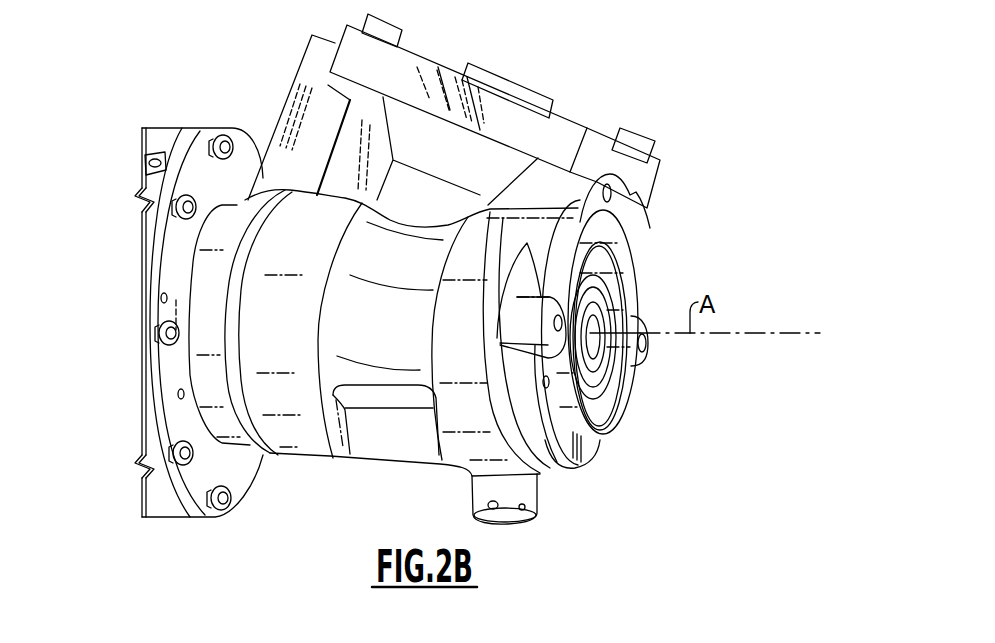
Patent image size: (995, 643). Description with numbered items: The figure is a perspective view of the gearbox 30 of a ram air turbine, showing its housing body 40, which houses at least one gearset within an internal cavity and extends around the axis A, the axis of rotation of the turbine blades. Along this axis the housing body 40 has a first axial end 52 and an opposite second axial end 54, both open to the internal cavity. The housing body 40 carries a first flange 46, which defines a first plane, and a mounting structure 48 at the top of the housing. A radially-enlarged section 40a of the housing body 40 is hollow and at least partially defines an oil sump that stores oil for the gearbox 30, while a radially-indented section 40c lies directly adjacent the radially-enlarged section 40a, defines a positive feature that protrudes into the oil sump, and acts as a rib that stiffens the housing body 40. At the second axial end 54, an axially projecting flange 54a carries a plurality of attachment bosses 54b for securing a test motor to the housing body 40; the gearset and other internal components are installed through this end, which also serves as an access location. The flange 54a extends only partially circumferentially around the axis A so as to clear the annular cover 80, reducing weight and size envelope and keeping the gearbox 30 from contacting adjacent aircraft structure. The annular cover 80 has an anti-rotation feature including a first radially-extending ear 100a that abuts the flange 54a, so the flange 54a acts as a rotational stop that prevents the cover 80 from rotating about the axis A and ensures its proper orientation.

The gearbox 30 is at (650, 233).
The housing body 40 is at (287, 245).
The radially-enlarged section 40a is at (453, 403).
The radially-indented section 40c is at (360, 436).
The first flange 46 is at (198, 269).
The mounting bracket 48 is at (583, 110).
The first axial end 52 is at (187, 363).
The second axial end 54 is at (638, 280).
The flange 54a is at (641, 368).
The attachment bosses 54b is at (646, 348).
The annular cover 80 is at (612, 440).
The first radially-extending ear 100a is at (545, 362).